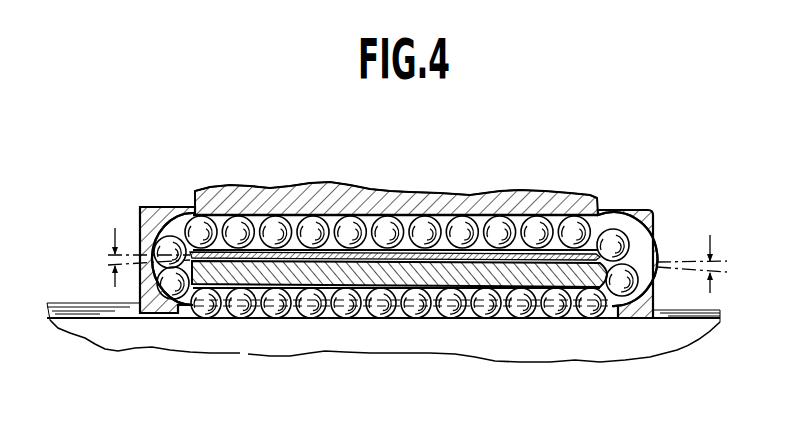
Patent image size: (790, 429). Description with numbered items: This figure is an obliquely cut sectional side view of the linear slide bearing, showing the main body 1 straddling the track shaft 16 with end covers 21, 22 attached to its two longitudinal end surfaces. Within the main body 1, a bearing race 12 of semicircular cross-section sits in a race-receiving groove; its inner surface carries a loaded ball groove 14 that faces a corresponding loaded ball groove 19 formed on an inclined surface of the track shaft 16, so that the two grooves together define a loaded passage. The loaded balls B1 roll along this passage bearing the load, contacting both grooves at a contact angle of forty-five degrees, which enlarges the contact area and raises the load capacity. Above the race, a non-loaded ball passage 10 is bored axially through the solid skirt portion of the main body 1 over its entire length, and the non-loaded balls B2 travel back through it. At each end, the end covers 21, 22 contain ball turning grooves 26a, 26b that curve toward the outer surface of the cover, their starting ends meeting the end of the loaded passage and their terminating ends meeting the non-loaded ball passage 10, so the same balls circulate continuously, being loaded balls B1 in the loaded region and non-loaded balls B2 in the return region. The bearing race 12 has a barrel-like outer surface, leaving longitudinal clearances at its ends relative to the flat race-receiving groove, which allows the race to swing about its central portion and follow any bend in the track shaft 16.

The main body 1 is at (365, 203).
The non-loaded ball passage 10 is at (288, 216).
The bearing race 12 is at (242, 245).
The loaded ball groove 14 is at (547, 321).
The track shaft 16 is at (275, 344).
The loaded ball groove 19 is at (467, 319).
The end cover 21 is at (158, 206).
The end cover 22 is at (635, 207).
The ball turning groove 26a is at (633, 250).
The ball turning groove 26b is at (157, 238).
The loaded ball B1 is at (343, 323).
The non-loaded ball B2 is at (313, 222).